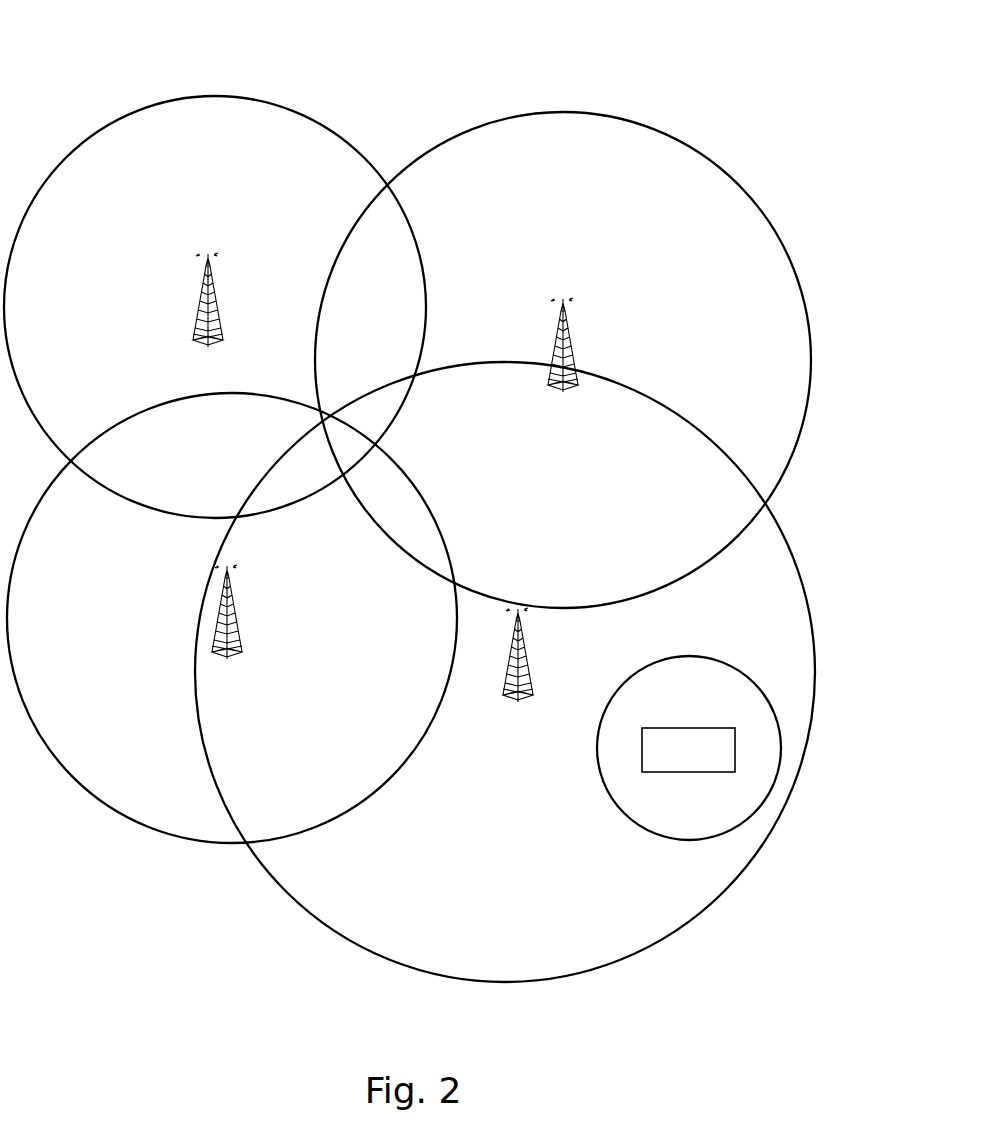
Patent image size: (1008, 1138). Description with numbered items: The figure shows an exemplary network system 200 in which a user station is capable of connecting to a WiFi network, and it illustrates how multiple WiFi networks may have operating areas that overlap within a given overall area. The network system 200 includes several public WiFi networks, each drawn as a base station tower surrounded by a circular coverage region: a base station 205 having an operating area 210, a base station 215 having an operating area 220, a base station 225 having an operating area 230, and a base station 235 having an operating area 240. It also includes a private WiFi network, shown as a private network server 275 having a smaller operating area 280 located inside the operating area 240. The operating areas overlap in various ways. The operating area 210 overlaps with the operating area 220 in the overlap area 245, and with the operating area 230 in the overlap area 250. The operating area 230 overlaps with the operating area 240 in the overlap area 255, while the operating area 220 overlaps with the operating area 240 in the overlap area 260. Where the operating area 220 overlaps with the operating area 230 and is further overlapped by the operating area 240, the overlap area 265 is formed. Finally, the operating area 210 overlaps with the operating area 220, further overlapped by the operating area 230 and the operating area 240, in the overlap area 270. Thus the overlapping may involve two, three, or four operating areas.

The network system 200 is at (663, 33).
The base station 205 is at (207, 254).
The operating area 210 is at (99, 252).
The base station 215 is at (562, 299).
The operating area 220 is at (469, 252).
The base station 225 is at (227, 690).
The operating area 230 is at (104, 752).
The base station 235 is at (519, 735).
The operating area 240 is at (628, 897).
The overlap area 245 is at (377, 252).
The overlap area 250 is at (163, 440).
The overlap area 255 is at (288, 752).
The overlap area 260 is at (654, 468).
The overlap area 265 is at (411, 533).
The overlap area 270 is at (349, 440).
The private network server 275 is at (689, 772).
The operating area 280 is at (751, 780).